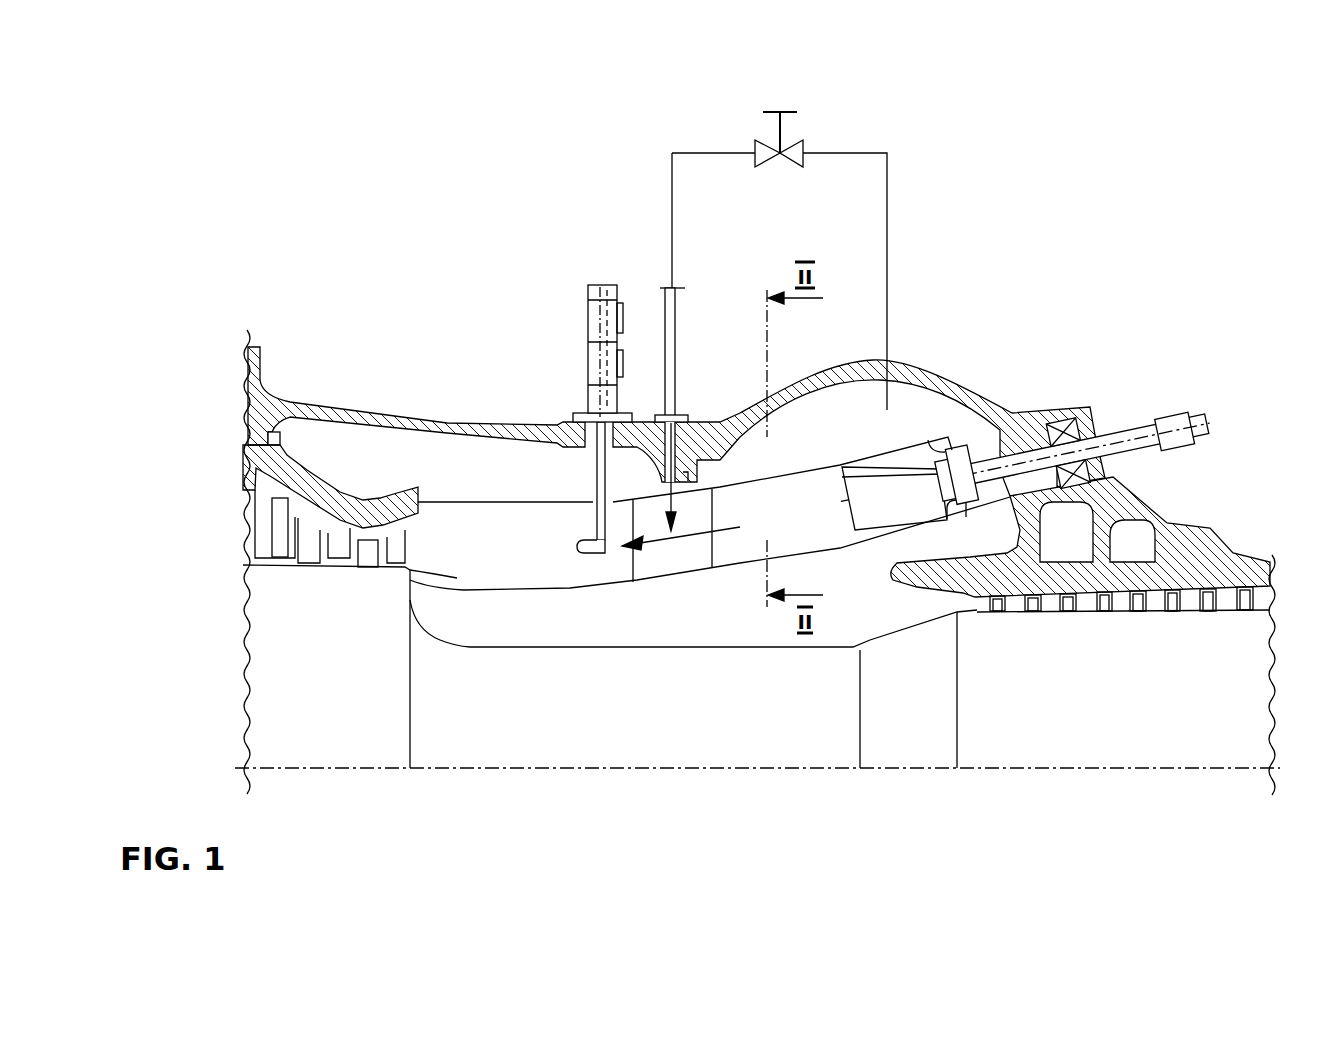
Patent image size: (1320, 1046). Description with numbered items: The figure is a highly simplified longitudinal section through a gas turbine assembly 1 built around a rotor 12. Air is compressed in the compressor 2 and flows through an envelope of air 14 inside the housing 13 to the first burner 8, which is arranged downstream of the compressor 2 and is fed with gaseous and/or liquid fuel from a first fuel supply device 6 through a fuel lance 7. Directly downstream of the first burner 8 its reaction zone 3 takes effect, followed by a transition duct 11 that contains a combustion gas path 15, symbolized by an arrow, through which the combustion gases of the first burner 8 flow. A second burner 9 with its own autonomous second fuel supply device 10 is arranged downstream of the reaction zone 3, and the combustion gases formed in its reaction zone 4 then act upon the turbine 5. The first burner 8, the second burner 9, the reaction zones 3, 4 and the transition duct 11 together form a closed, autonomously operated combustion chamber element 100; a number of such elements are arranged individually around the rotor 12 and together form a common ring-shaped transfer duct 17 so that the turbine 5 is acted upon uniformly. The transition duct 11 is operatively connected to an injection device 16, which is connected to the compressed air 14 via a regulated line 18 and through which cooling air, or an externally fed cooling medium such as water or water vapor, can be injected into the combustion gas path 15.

The gas turbine assembly 1 is at (369, 255).
The compressor 2 is at (1137, 600).
The reaction zone 3 is at (786, 525).
The reaction zone 4 is at (522, 553).
The turbine 5 is at (308, 545).
The first fuel supply device 6 is at (1137, 437).
The fuel lance 7 is at (1020, 460).
The first burner 8 is at (880, 485).
The second burner 9 is at (602, 480).
The second fuel supply device 10 is at (593, 360).
The transition duct 11 is at (660, 565).
The rotor 12 is at (1022, 728).
The housing 13 is at (847, 375).
The envelope of air 14 is at (457, 483).
The combustion gas path 15 is at (682, 543).
The injection device 16 is at (673, 348).
The transfer duct 17 is at (432, 542).
The regulated line 18 is at (855, 153).
The combustion chamber element 100 is at (840, 555).